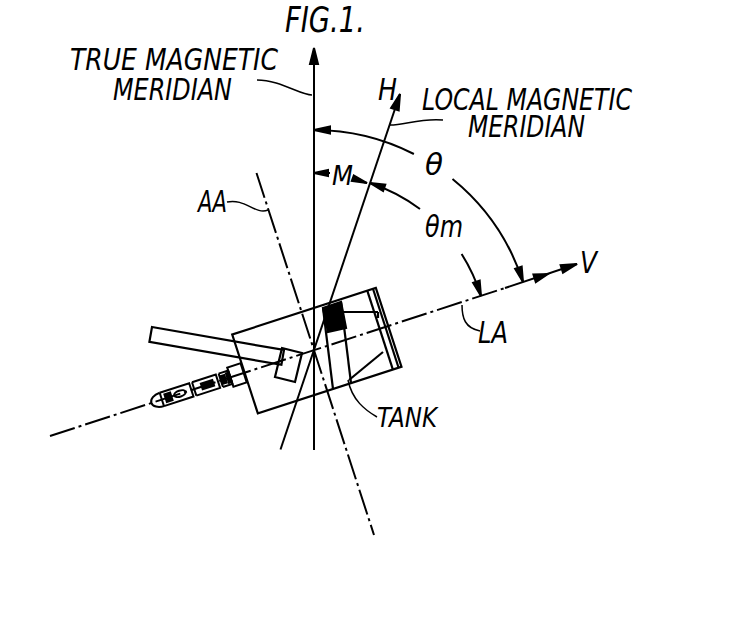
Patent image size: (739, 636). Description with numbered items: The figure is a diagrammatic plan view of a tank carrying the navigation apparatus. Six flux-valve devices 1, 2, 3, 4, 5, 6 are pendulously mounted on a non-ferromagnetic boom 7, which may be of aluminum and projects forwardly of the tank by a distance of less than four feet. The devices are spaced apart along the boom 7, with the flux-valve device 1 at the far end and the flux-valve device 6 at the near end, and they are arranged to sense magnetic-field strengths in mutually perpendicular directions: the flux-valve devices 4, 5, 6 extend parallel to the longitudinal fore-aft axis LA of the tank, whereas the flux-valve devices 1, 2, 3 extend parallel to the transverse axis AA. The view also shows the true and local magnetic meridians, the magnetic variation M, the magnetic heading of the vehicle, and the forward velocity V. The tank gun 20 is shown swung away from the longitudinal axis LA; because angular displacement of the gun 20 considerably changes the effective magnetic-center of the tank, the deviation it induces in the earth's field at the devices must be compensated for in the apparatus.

The flux-valve device 1 is at (168, 407).
The flux-valve device 2 is at (195, 403).
The flux-valve device 3 is at (218, 390).
The flux-valve device 4 is at (167, 395).
The flux-valve device 5 is at (177, 391).
The flux-valve device 6 is at (228, 382).
The non-ferromagnetic boom 7 is at (150, 402).
The tank gun 20 is at (200, 343).